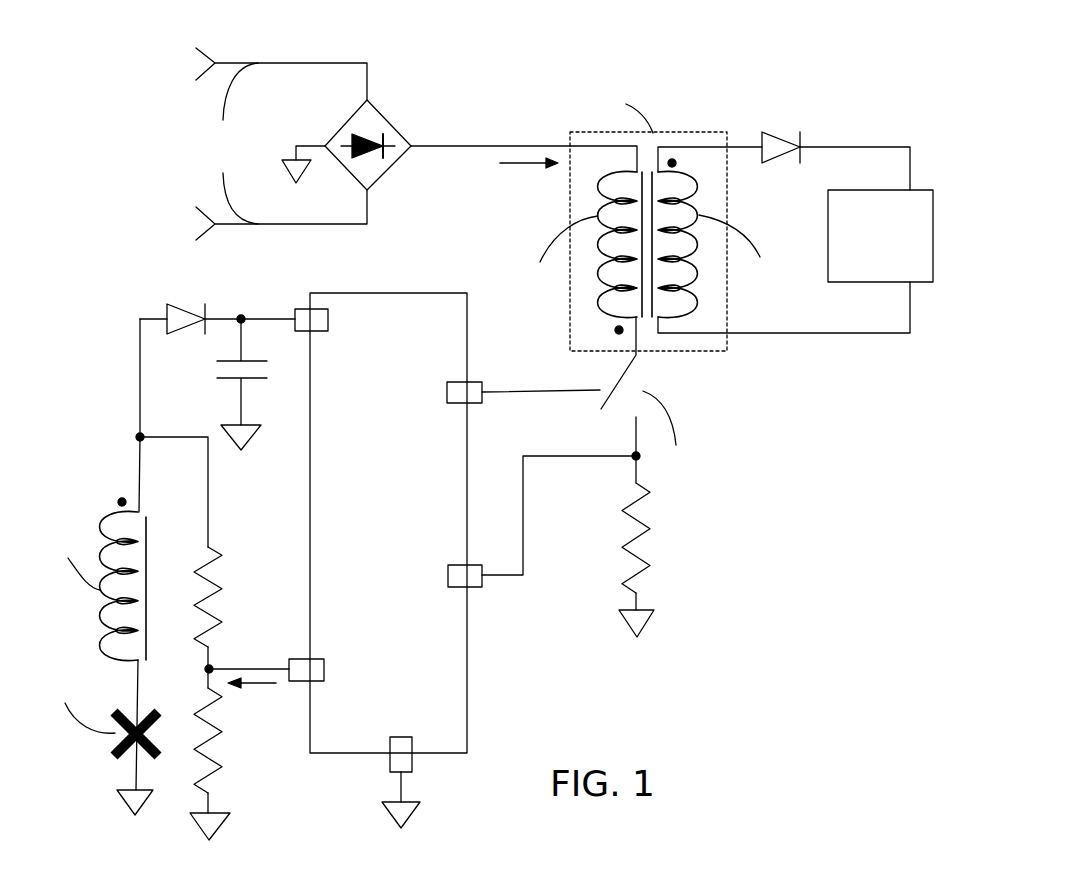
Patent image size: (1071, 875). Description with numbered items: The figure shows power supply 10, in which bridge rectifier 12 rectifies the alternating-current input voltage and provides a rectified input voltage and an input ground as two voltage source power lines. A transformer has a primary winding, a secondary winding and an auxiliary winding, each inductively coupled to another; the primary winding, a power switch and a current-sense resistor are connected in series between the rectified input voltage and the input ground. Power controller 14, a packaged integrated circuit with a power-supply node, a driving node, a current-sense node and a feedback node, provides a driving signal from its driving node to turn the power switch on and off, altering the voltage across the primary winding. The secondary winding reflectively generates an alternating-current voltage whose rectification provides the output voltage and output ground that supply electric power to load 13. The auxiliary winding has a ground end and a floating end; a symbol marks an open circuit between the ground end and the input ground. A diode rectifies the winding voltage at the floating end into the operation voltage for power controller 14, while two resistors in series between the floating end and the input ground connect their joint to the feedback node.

The power supply 10 is at (557, 60).
The bridge rectifier 12 is at (380, 100).
The load 13 is at (894, 259).
The power controller 14 is at (410, 493).